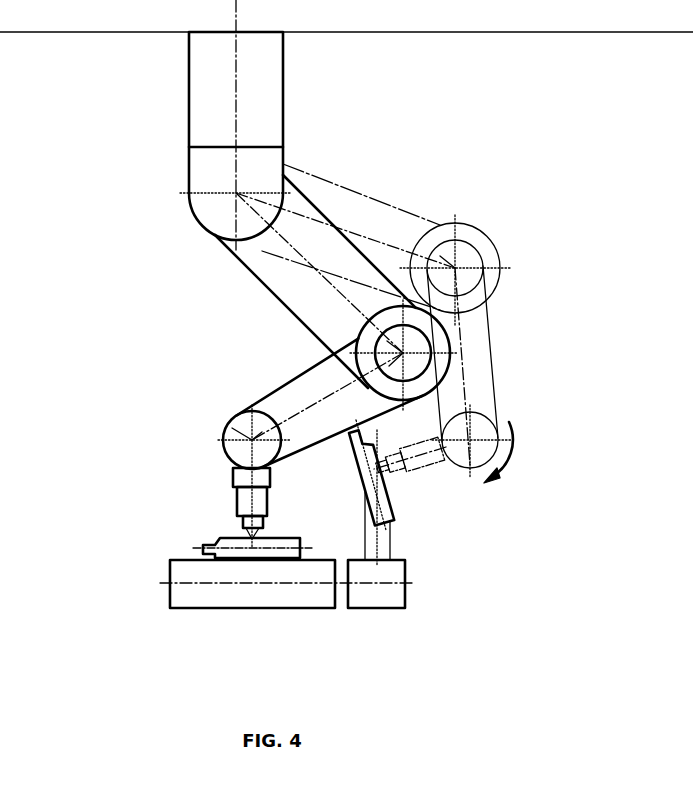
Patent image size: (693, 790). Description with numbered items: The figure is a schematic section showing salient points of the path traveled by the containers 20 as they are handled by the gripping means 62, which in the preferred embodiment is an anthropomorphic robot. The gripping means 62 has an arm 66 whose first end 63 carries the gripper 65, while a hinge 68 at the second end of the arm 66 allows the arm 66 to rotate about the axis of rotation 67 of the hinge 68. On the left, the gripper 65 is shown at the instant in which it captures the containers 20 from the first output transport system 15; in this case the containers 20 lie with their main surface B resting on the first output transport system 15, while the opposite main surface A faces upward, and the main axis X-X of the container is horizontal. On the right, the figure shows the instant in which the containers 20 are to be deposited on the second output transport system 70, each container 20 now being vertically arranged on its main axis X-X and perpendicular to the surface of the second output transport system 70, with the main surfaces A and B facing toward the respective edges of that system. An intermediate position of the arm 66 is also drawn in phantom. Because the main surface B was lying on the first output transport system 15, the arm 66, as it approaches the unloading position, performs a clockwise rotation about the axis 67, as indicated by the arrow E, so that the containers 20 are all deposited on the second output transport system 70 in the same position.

The gripping means 62 is at (394, 239).
The first end 63 is at (268, 518).
The gripper 65 is at (176, 483).
The arm 66 is at (178, 451).
The axis of rotation 67 is at (193, 439).
The hinge 68 is at (183, 423).
The second output transport system 70 is at (431, 537).
The first output transport system 15 is at (273, 612).
The containers 20 is at (278, 489).
The main surface A is at (285, 495).
The main surface B is at (211, 572).
The arrow E is at (550, 452).
The main axis X-X is at (289, 551).